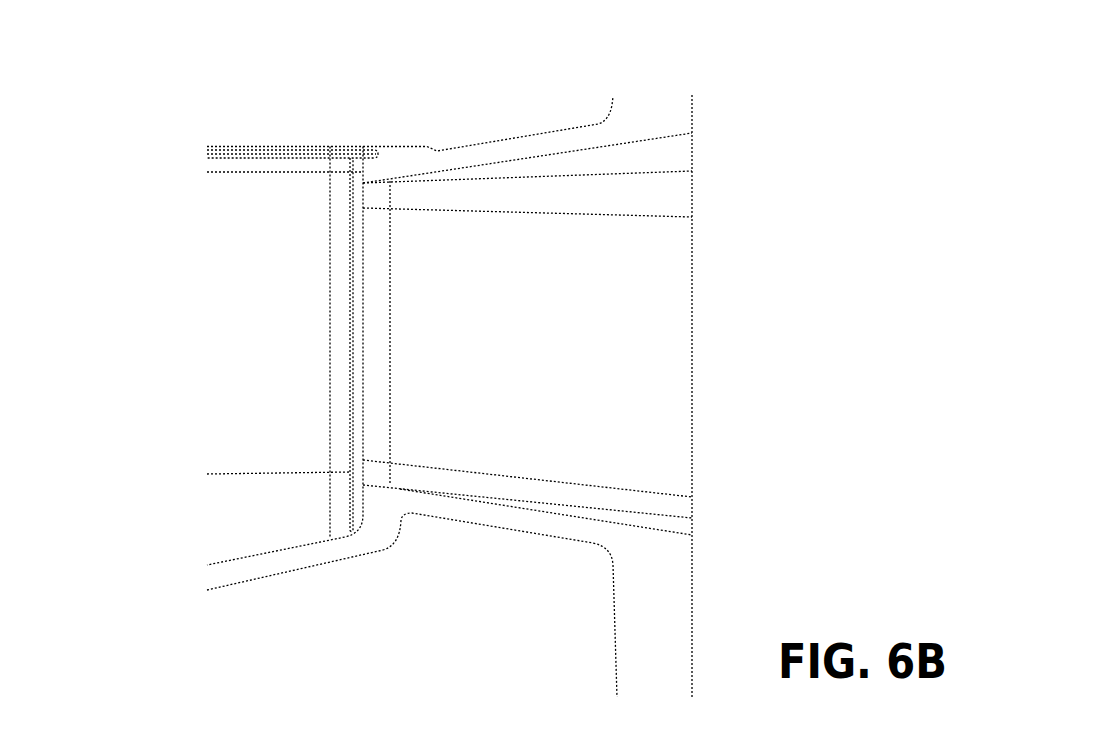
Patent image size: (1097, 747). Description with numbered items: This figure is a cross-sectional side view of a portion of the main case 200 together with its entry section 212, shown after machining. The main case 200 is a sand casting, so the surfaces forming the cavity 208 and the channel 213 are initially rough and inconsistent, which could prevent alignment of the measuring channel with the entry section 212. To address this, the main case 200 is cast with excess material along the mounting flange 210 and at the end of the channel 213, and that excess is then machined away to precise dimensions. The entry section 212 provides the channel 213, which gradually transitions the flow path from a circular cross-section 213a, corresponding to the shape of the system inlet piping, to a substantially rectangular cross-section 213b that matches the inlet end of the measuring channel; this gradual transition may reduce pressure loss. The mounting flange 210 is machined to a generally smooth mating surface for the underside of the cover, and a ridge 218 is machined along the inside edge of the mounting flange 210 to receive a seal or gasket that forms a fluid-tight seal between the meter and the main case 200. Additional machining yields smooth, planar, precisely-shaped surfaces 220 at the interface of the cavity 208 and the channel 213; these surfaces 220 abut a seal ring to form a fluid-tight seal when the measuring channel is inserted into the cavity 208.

The main case 200 is at (160, 43).
The cavity 208 is at (253, 462).
The mounting flange 210 is at (345, 147).
The entry section 212 is at (733, 366).
The channel 213 is at (563, 332).
The circular cross-section 213a is at (693, 482).
The substantially rectangular cross-section 213b is at (365, 478).
The ridge 218 is at (247, 157).
The surfaces 220 is at (358, 268).